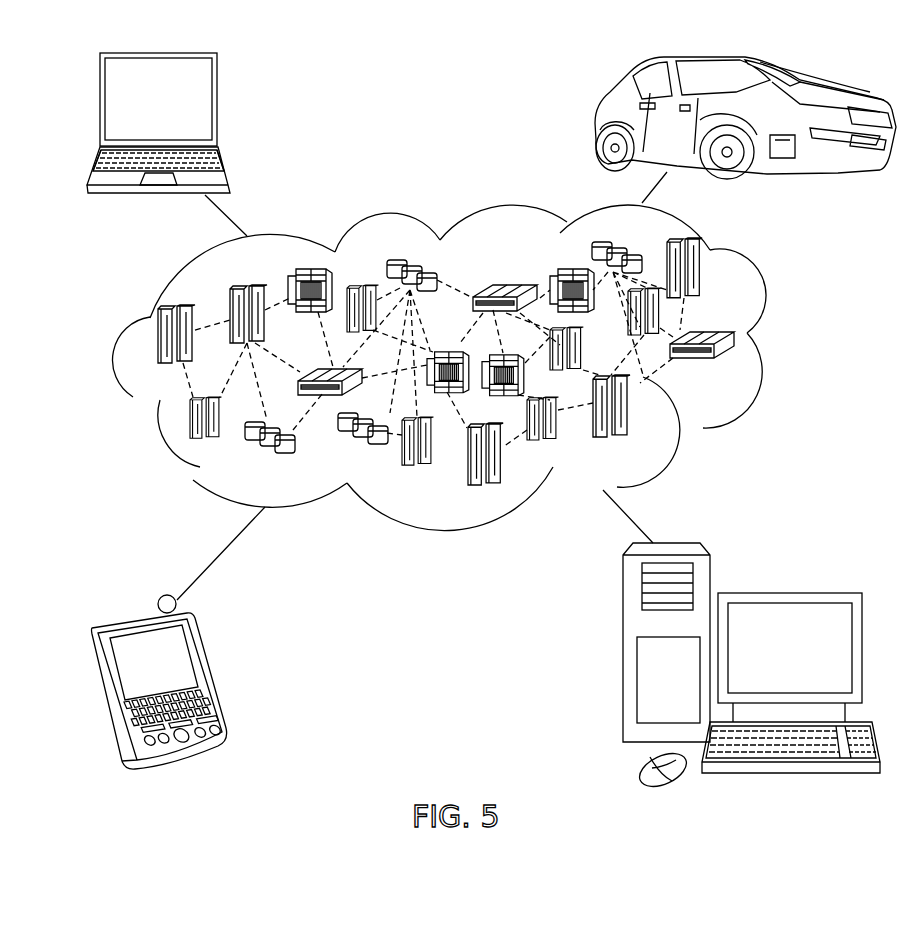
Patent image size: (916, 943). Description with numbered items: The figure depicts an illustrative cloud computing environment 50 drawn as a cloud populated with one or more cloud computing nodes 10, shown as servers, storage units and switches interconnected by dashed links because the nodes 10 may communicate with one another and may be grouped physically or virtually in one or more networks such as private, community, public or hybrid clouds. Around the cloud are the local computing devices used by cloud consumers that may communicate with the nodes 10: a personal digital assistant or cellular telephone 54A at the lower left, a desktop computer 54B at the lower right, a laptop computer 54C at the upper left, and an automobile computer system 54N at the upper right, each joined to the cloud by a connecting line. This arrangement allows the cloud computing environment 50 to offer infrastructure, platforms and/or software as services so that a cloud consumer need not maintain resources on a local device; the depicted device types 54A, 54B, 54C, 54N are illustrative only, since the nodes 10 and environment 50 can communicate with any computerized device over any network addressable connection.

The cloud computing node 10 is at (738, 370).
The cloud computing environment 50 is at (473, 368).
The personal digital assistant or cellular telephone 54A is at (212, 674).
The desktop computer 54B is at (789, 588).
The laptop computer 54C is at (218, 106).
The automobile computer system 54N is at (596, 118).